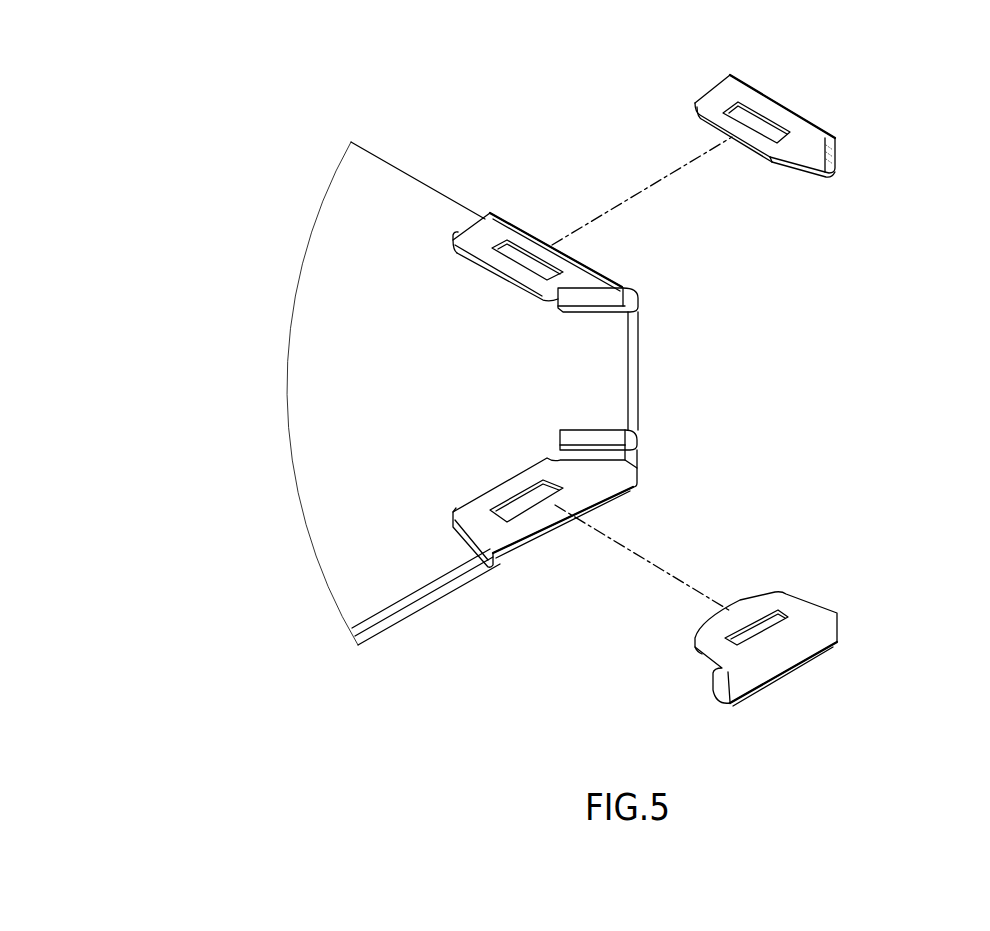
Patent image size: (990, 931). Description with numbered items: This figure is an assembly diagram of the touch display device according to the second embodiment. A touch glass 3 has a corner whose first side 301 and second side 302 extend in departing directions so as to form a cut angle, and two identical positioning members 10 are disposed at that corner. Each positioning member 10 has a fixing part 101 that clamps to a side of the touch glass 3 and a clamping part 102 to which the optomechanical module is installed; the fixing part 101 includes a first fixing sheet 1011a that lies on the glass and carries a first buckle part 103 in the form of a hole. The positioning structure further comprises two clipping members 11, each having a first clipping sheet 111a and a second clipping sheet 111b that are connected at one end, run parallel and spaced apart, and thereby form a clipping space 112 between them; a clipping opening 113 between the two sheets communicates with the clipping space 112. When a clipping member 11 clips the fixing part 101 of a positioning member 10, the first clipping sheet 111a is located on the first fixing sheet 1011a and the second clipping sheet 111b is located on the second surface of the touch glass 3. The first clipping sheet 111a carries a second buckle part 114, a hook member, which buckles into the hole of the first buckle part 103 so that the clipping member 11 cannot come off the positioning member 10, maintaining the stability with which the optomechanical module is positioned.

The touch glass 3 is at (344, 417).
The first side 301 is at (382, 158).
The second side 302 is at (467, 578).
The positioning member 10 is at (470, 400).
The fixing part 101 is at (600, 263).
The clamping part 102 is at (638, 298).
The first buckle part 103 is at (553, 271).
The first fixing sheet 1011a is at (470, 237).
The clipping member 11 is at (776, 419).
The first clipping sheet 111a is at (697, 98).
The second clipping sheet 111b is at (822, 176).
The clipping space 112 is at (790, 167).
The clipping opening 113 is at (833, 153).
The second buckle part 114 is at (762, 118).